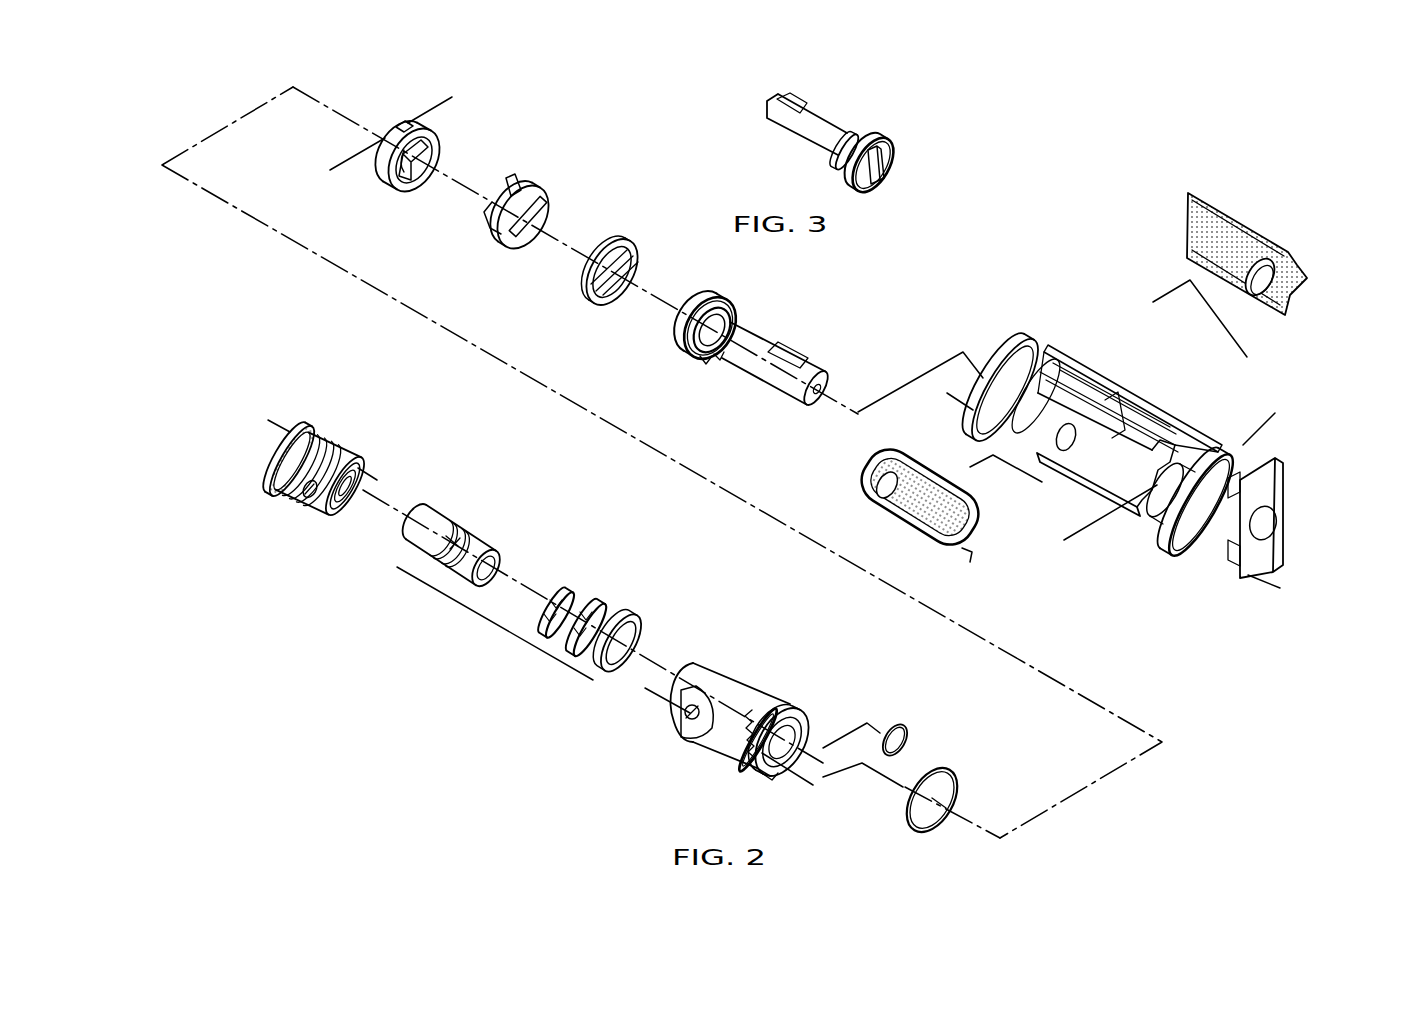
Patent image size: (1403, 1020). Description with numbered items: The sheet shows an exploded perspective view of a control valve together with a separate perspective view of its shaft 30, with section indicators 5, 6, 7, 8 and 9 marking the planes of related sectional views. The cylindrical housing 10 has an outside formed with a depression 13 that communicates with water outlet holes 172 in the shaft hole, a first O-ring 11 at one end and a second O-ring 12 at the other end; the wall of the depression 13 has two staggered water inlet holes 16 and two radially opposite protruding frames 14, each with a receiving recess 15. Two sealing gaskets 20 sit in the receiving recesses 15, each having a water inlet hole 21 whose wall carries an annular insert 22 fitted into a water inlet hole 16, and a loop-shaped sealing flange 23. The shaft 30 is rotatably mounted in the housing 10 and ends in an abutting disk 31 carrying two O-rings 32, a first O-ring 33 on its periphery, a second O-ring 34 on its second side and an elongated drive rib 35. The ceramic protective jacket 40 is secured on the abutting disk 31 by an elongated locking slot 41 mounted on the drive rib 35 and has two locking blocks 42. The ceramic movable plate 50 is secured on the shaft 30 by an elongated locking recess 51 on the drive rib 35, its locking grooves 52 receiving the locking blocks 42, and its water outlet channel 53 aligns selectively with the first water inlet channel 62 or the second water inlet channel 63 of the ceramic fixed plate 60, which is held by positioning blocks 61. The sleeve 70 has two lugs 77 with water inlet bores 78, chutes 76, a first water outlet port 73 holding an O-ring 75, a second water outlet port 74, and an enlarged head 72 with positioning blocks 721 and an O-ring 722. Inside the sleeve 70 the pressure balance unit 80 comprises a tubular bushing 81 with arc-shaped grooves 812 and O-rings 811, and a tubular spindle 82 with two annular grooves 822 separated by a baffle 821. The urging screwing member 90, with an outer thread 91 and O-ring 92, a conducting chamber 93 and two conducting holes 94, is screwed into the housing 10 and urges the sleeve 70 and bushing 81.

In FIG. 2, the section line 5- 5 is at (1275, 413).
In FIG. 2, the section line 6- 6 is at (947, 393).
In FIG. 2, the section line 7- 7 is at (452, 97).
In FIG. 2, the section line 8- 8 is at (645, 688).
In FIG. 2, the section line 9- 9 is at (268, 420).
In FIG. 2, the housing 10 is at (1290, 505).
In FIG. 2, the first O-ring 11 is at (1258, 452).
In FIG. 2, the second O-ring 12 is at (1010, 340).
In FIG. 2, the depression 13 is at (1182, 420).
In FIG. 2, the protruding frames 14 is at (1094, 398).
In FIG. 2, the receiving recess 15 is at (1120, 440).
In FIG. 2, the water inlet holes 16 is at (1060, 425).
In FIG. 2, the water outlet holes 172 is at (1158, 518).
In FIG. 2, the sealing gaskets 20 is at (1255, 195).
In FIG. 2, the water inlet hole 21 is at (860, 490).
In FIG. 2, the annular insert 22 is at (1260, 296).
In FIG. 2, the loop-shaped sealing flange 23 is at (968, 553).
In FIG. 2, the shaft 30 is at (758, 392).
In FIG. 3, the shaft 30 is at (833, 115).
In FIG. 3, the abutting disk 31 is at (890, 148).
In FIG. 2, the O-rings 32 is at (721, 360).
In FIG. 2, the first O-ring 33 is at (702, 298).
In FIG. 3, the first O-ring 33 is at (878, 132).
In FIG. 2, the second O-ring 34 is at (738, 316).
In FIG. 3, the elongated drive rib 35 is at (878, 166).
In FIG. 2, the protective jacket 40 is at (622, 238).
In FIG. 2, the elongated locking slot 41 is at (613, 304).
In FIG. 2, the locking blocks 42 is at (600, 242).
In FIG. 2, the movable plate 50 is at (537, 186).
In FIG. 2, the elongated locking recess 51 is at (532, 244).
In FIG. 2, the locking grooves 52 is at (512, 184).
In FIG. 2, the water outlet channel 53 is at (496, 206).
In FIG. 2, the fixed plate 60 is at (412, 120).
In FIG. 2, the positioning blocks 61 is at (401, 121).
In FIG. 2, the first water inlet channel 62 is at (434, 148).
In FIG. 2, the second water inlet channel 63 is at (412, 188).
In FIG. 2, the sleeve 70 is at (722, 750).
In FIG. 2, the enlarged head 72 is at (745, 760).
In FIG. 2, the first water outlet port 73 is at (800, 730).
In FIG. 2, the second water outlet port 74 is at (768, 772).
In FIG. 2, the O-ring 75 is at (902, 728).
In FIG. 2, the chutes 76 is at (754, 710).
In FIG. 2, the lugs 77 is at (692, 688).
In FIG. 2, the water inlet bore 78 is at (686, 718).
In FIG. 2, the positioning blocks 721 is at (770, 712).
In FIG. 2, the O-ring 722 is at (948, 770).
In FIG. 2, the pressure balance unit 80 is at (523, 580).
In FIG. 2, the tubular bushing 81 is at (614, 622).
In FIG. 2, the tubular spindle 82 is at (480, 548).
In FIG. 2, the O-rings 811 is at (561, 598).
In FIG. 2, the arc-shaped grooves 812 is at (580, 612).
In FIG. 2, the baffle 821 is at (452, 534).
In FIG. 2, the annular grooves 822 is at (440, 530).
In FIG. 2, the urging screwing member 90 is at (333, 428).
In FIG. 2, the outer thread 91 is at (285, 495).
In FIG. 2, the O-ring 92 is at (274, 468).
In FIG. 2, the conducting chamber 93 is at (345, 496).
In FIG. 2, the conducting holes 94 is at (310, 496).